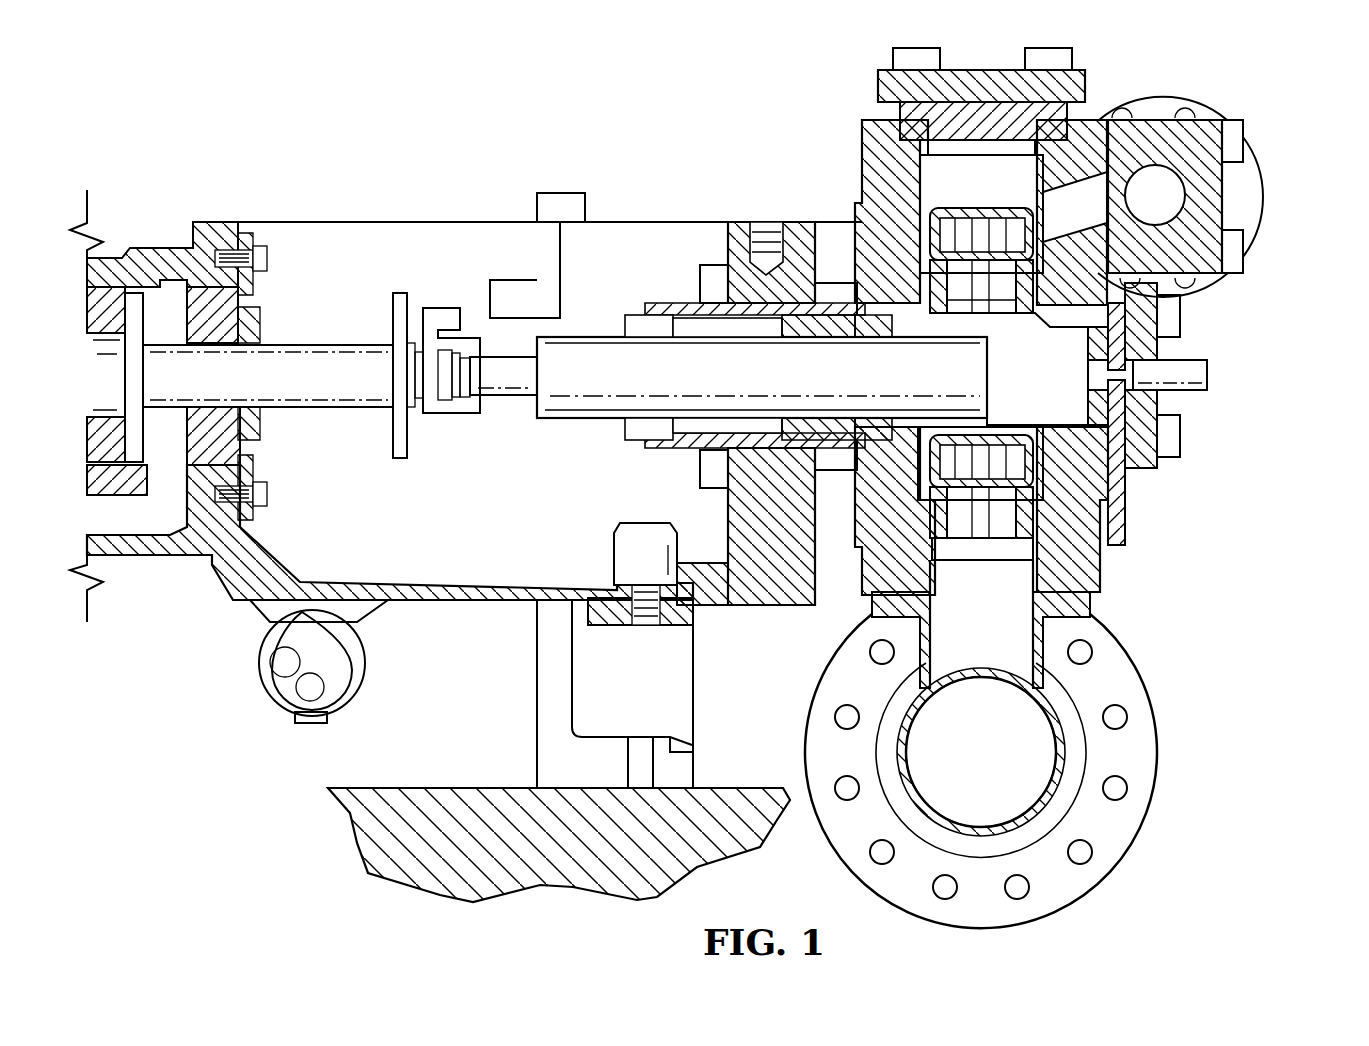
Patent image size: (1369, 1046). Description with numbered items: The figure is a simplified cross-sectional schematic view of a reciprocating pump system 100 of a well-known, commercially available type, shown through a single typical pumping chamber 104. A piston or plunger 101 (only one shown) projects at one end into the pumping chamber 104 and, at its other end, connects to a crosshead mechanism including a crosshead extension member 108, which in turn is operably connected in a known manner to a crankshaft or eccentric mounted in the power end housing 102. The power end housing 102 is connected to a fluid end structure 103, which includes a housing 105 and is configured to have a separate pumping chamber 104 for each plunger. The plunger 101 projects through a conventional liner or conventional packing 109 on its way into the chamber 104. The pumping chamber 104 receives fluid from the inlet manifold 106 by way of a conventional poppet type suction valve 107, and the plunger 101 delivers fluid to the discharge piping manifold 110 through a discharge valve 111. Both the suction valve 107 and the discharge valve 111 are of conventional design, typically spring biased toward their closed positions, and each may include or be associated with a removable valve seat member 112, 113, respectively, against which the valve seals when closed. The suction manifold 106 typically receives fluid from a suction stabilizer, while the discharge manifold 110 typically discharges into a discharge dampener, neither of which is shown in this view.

The pump system 100 is at (450, 110).
The piston or plunger 101 is at (582, 420).
The power end housing 102 is at (220, 590).
The fluid end structure 103 is at (1110, 556).
The pumping chamber 104 is at (1060, 395).
The housing 105 is at (852, 580).
The inlet manifold 106 is at (1083, 740).
The suction valve 107 is at (987, 558).
The crosshead extension member 108 is at (325, 409).
The packing 109 is at (685, 303).
The discharge piping manifold 110 is at (1258, 198).
The discharge valve 111 is at (985, 210).
The valve seat member 112 is at (1030, 533).
The valve seat member 113 is at (937, 312).